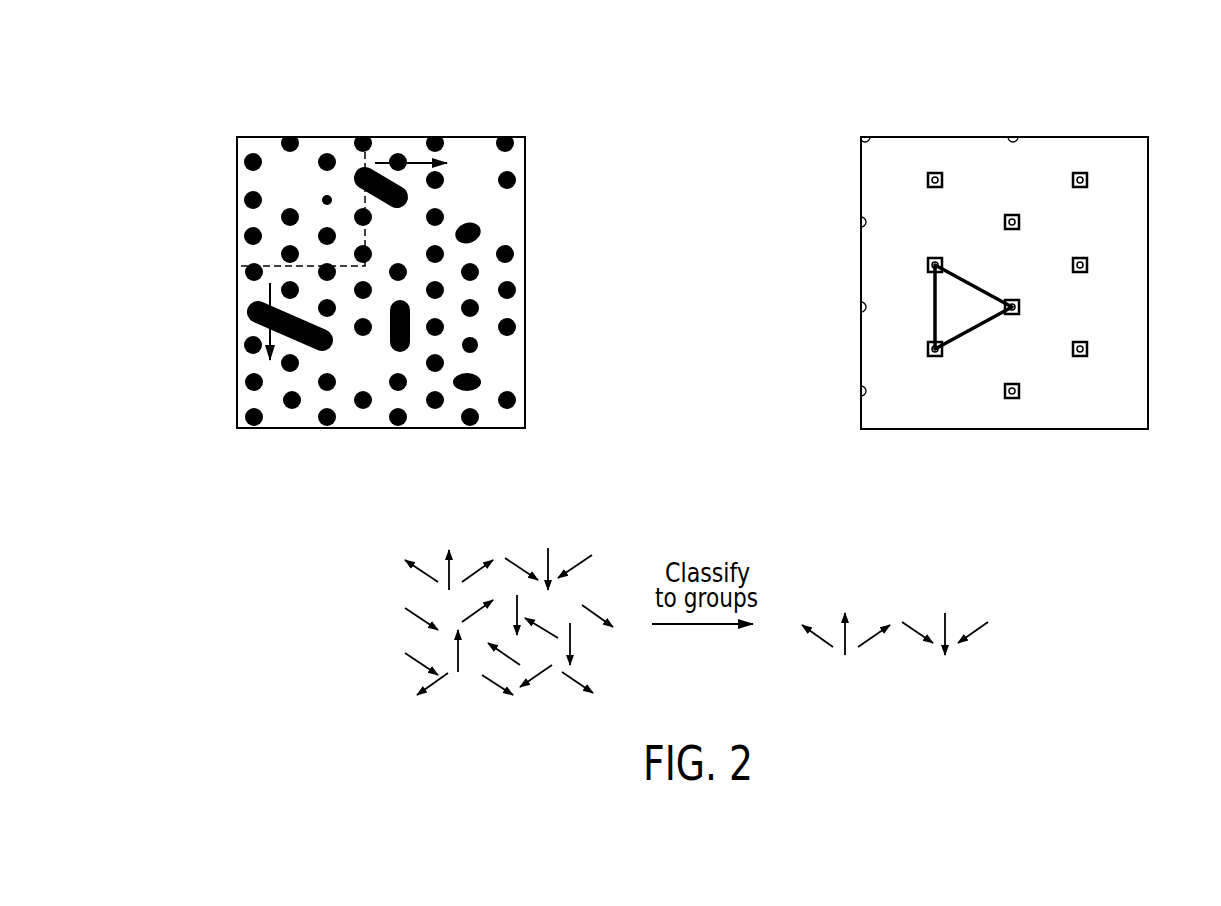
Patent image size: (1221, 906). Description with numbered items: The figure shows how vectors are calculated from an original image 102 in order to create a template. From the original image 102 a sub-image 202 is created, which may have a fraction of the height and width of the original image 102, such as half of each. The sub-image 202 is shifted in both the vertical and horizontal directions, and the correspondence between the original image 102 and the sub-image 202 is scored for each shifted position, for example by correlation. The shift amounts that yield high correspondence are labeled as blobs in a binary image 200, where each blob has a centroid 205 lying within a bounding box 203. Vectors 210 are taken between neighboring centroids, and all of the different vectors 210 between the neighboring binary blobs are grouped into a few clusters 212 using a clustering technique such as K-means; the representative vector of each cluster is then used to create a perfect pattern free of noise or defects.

The original image 102 is at (300, 78).
The sub-image 202 is at (237, 217).
The bounding box 203 is at (931, 263).
The centroid 205 is at (933, 266).
The binary image 200 is at (1122, 95).
The vectors 210 is at (420, 535).
The clusters 212 is at (980, 585).